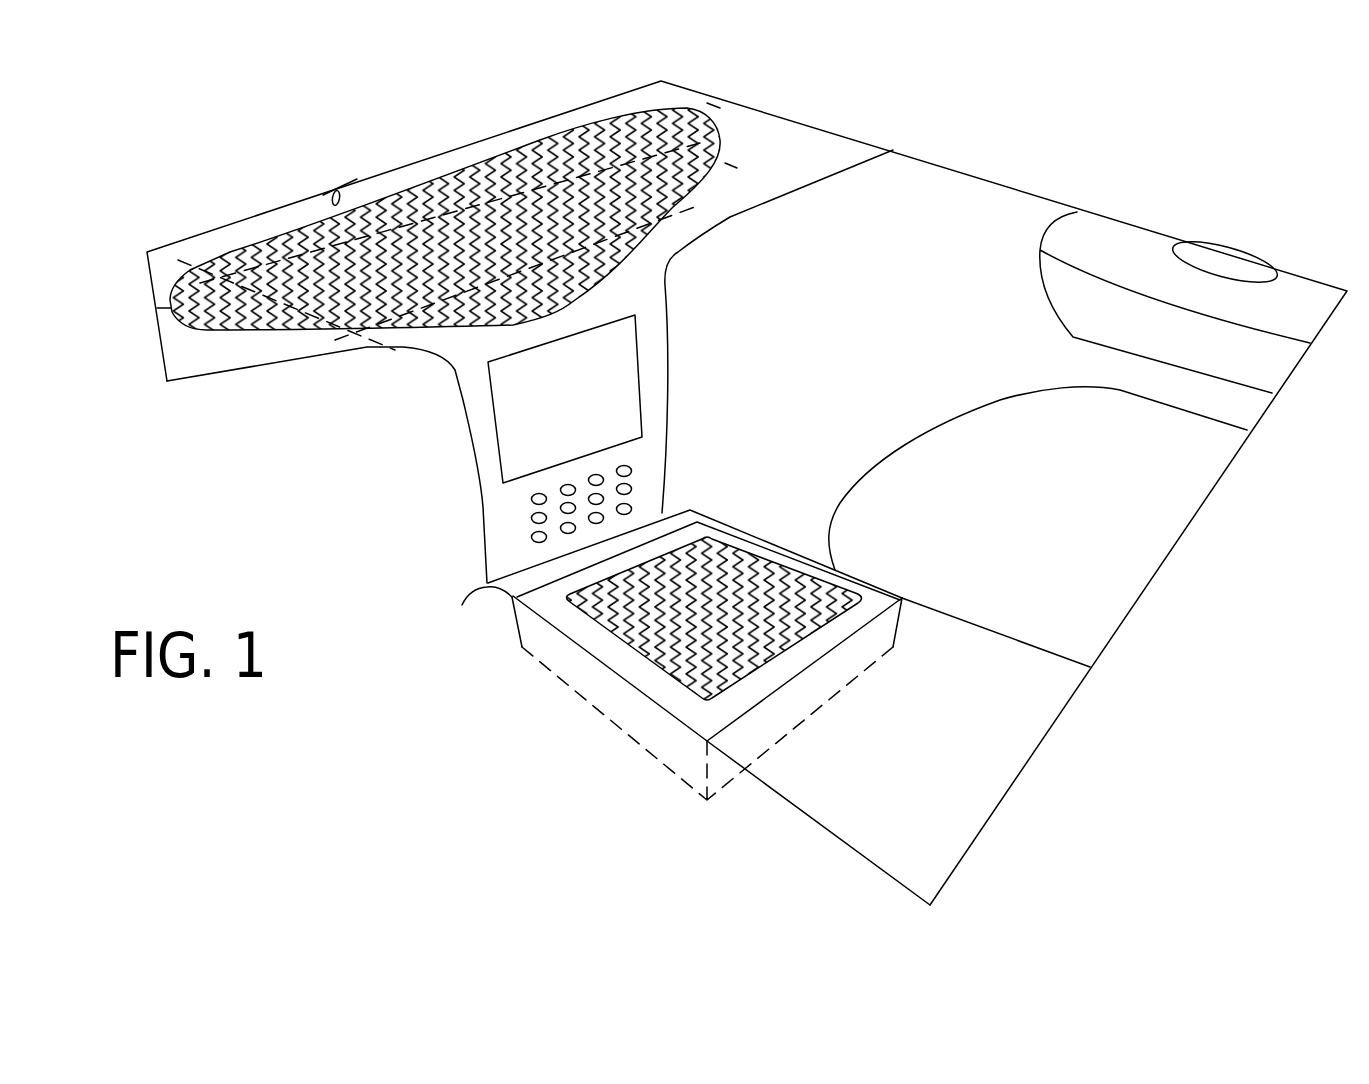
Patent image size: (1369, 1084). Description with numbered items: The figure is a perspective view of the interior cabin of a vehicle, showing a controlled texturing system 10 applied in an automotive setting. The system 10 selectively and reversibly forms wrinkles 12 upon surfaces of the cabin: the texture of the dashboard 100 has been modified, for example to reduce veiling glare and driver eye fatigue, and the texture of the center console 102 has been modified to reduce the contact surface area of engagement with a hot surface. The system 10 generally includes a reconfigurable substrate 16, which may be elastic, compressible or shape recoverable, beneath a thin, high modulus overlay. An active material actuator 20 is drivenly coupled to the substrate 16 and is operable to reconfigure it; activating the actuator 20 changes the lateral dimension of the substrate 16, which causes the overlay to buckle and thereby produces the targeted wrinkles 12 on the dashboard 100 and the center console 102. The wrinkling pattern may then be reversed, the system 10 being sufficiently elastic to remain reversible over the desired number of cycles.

The system 10 is at (469, 112).
The wrinkles 12 is at (540, 248).
The substrate 16 is at (577, 677).
The active material actuator 20 is at (338, 198).
The dashboard 100 is at (812, 167).
The center console 102 is at (925, 729).